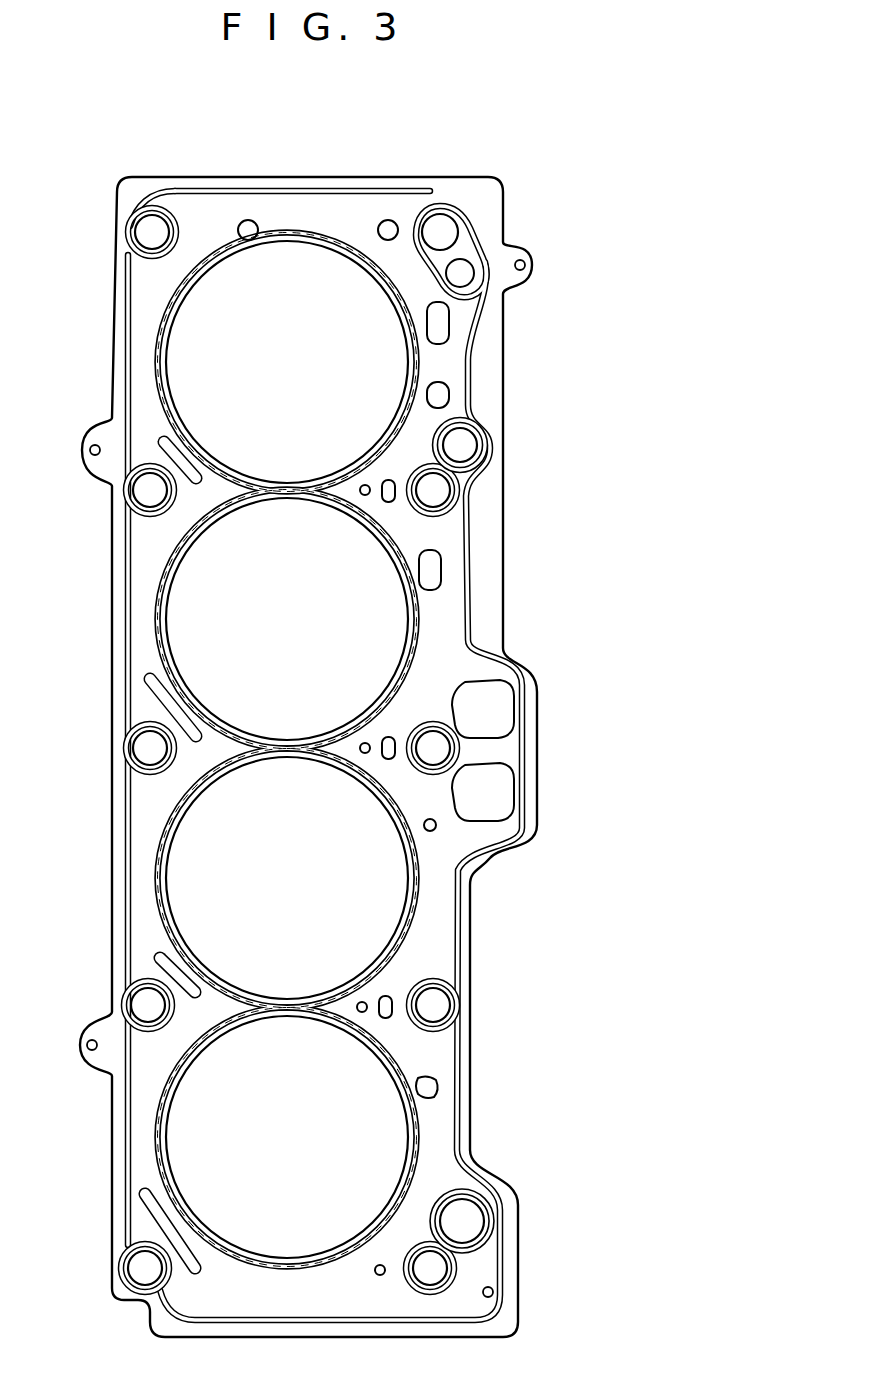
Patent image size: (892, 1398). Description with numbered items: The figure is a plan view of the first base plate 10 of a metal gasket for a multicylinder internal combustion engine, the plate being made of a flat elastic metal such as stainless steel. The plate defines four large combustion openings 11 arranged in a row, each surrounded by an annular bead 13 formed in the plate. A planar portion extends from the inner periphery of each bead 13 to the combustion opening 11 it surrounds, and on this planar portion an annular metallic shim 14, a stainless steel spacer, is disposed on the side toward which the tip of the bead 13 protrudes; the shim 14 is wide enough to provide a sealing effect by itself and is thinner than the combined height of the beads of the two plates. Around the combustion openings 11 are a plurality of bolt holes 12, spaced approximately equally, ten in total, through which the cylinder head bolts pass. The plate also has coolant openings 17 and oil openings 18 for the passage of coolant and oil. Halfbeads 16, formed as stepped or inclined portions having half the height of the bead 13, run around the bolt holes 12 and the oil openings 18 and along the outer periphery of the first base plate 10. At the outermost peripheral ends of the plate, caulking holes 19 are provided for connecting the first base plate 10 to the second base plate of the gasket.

The first base plate 10 is at (485, 188).
The combustion opening 11 is at (332, 258).
The bolt hole 12 is at (440, 235).
The annular bead 13 is at (278, 225).
The annular metallic shim 14 is at (408, 372).
The halfbead 16 is at (198, 190).
The coolant opening 17 is at (392, 222).
The oil opening 18 is at (460, 273).
The caulking hole 19 is at (523, 262).